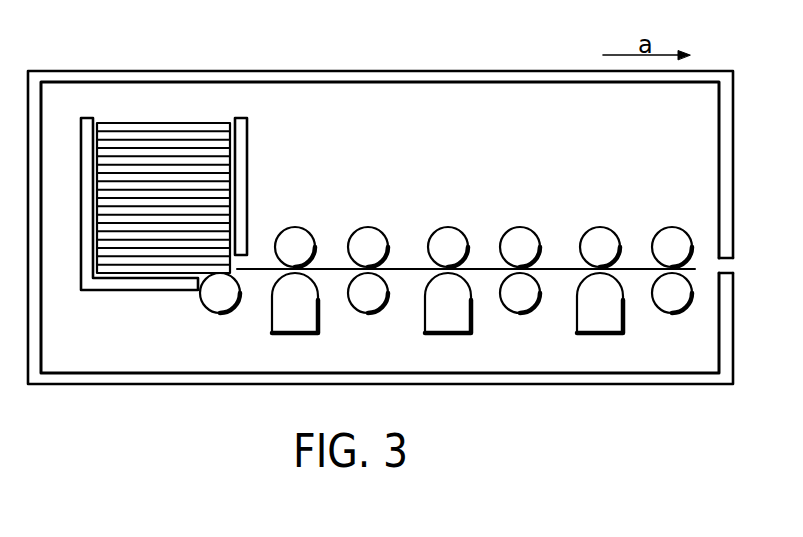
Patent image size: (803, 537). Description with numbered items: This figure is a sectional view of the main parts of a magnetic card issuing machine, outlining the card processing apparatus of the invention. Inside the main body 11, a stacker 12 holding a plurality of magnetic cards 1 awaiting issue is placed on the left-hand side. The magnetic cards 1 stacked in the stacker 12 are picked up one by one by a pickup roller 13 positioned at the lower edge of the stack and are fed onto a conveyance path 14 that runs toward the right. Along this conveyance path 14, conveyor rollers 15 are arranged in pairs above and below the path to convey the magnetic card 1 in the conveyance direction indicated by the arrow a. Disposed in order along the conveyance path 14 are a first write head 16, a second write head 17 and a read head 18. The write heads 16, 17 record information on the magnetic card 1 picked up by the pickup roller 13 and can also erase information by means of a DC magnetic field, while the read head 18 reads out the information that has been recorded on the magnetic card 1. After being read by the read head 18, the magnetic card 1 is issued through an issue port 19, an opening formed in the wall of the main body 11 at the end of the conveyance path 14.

The magnetic card 1 is at (172, 122).
The main body 11 is at (358, 70).
The stacker 12 is at (250, 152).
The pickup roller 13 is at (205, 310).
The conveyance path 14 is at (405, 287).
The conveyor rollers 15 is at (380, 226).
The write head 16 is at (302, 333).
The write head 17 is at (452, 335).
The read head 18 is at (613, 332).
The issue port 19 is at (733, 265).